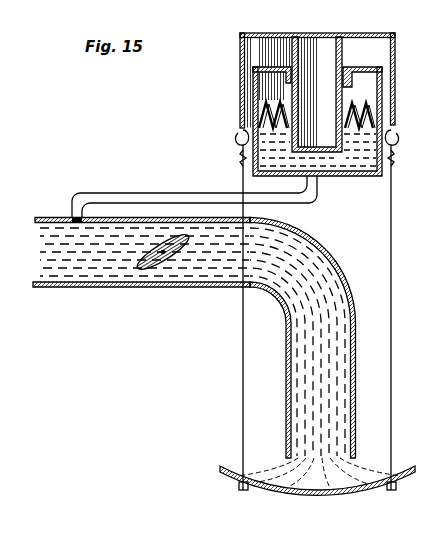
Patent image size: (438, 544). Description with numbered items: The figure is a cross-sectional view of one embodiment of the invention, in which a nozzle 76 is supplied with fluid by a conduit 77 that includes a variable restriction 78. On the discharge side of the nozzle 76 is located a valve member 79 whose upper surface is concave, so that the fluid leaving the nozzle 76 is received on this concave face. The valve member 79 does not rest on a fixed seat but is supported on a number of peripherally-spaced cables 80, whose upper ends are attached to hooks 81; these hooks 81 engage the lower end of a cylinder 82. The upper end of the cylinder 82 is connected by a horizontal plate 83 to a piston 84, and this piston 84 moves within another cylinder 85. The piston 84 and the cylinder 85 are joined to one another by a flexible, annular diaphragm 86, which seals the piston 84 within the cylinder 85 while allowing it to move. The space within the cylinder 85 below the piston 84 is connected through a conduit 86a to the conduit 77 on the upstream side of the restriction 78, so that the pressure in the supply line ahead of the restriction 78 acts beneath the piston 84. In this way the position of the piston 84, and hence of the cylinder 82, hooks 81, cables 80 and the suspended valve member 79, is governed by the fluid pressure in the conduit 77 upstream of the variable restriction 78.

The nozzle 76 is at (354, 383).
The conduit 77 is at (83, 270).
The variable restriction 78 is at (180, 255).
The valve member 79 is at (268, 492).
The cables 80 is at (391, 246).
The hooks 81 is at (233, 142).
The cylinder 82 is at (240, 76).
The horizontal plate 83 is at (373, 33).
The piston 84 is at (330, 46).
The cylinder 85 is at (357, 176).
The flexible annular diaphragm 86 is at (352, 105).
The conduit 86a is at (303, 205).